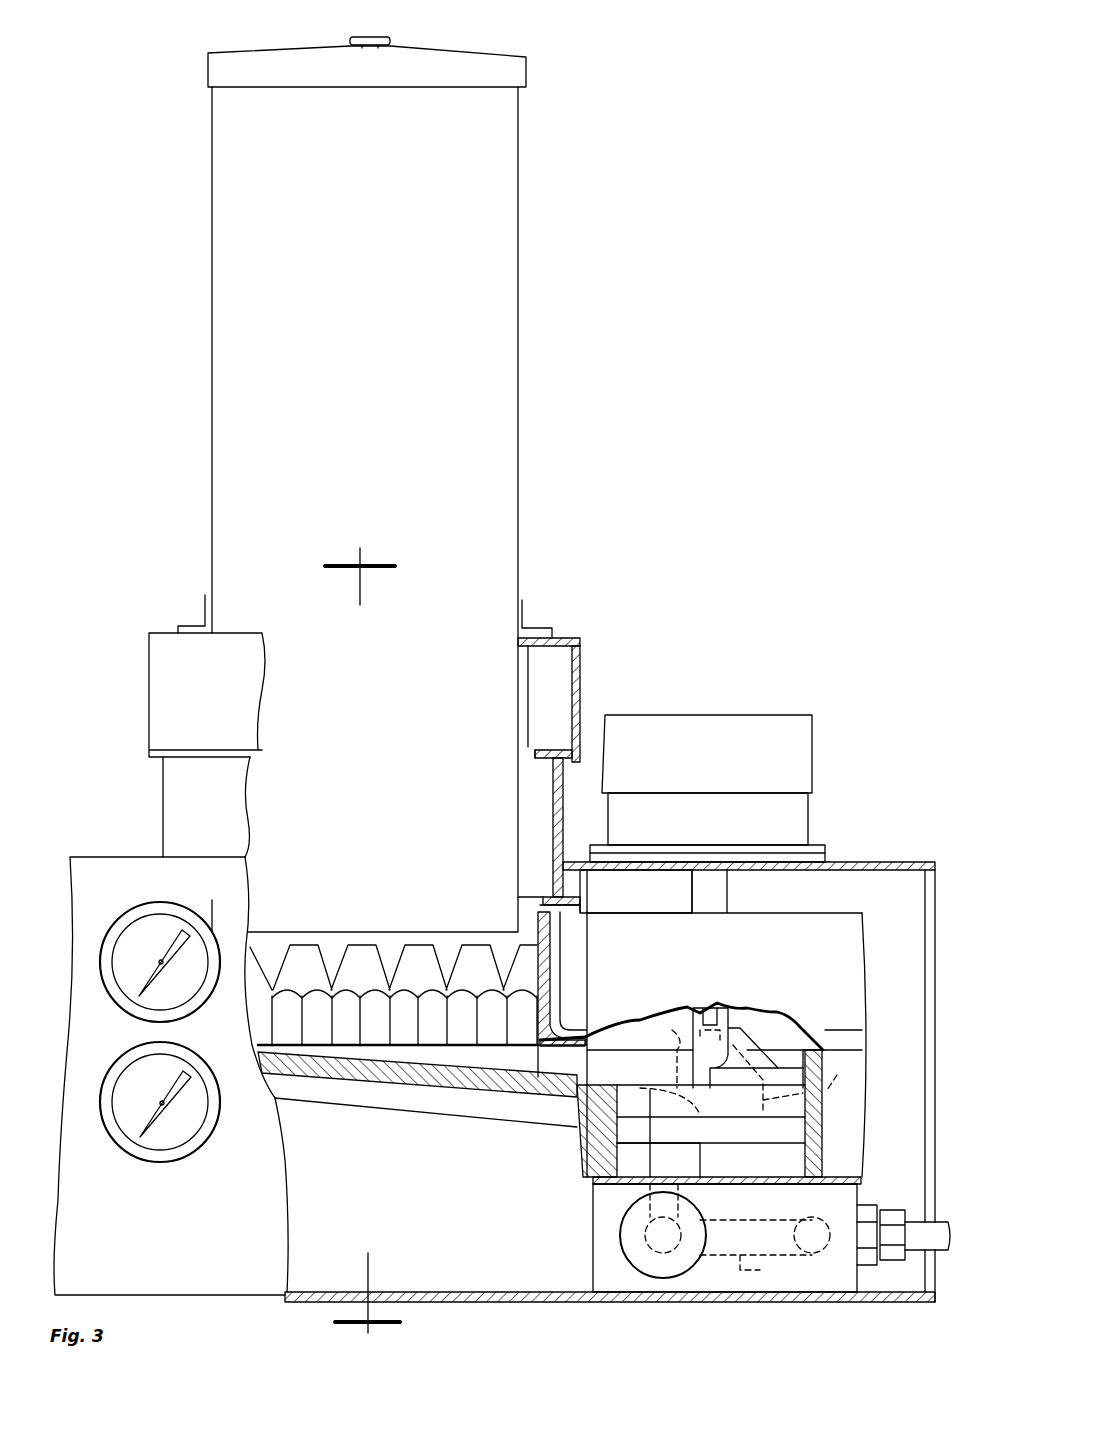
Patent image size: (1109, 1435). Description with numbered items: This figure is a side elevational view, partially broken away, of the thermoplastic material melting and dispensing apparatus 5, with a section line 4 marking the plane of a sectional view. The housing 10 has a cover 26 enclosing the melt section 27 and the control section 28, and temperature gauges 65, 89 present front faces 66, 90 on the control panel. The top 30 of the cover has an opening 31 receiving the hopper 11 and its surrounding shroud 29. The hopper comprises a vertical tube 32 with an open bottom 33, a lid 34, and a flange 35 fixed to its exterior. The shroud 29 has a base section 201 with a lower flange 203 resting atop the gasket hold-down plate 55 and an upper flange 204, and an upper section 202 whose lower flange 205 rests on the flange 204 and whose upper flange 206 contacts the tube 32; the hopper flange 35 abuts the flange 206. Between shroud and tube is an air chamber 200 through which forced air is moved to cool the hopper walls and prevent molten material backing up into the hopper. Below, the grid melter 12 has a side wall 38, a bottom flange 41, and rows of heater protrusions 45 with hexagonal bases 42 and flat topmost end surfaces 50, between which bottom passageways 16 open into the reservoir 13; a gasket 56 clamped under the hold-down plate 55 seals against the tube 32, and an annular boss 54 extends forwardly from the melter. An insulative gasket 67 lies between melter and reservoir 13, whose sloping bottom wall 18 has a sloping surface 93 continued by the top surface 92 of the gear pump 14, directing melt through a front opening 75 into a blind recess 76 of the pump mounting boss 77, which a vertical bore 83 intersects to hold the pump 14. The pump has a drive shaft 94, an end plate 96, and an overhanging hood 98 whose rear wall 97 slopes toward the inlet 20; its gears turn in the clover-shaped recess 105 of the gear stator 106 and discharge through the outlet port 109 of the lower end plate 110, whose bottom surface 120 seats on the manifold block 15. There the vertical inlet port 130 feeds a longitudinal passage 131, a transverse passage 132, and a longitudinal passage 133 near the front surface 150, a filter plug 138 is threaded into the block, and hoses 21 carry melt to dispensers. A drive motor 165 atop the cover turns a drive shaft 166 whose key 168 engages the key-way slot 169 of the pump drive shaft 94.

The section line 4 is at (362, 946).
The thermoplastic material melting and dispensing apparatus 5 is at (776, 362).
The housing 10 is at (945, 834).
The hopper 11 is at (540, 297).
The grid melter 12 is at (565, 971).
The reservoir 13 is at (288, 1092).
The gear pump 14 is at (815, 1112).
The manifold block 15 is at (590, 1262).
The bottom passageways 16 is at (378, 1032).
The sloping bottom wall 18 is at (446, 1058).
The pump inlet 20 is at (844, 1067).
The hoses or conduits 21 is at (940, 1236).
The cover 26 is at (935, 922).
The melt section 27 is at (710, 1335).
The control section 28 is at (92, 850).
The shroud 29 is at (165, 707).
The top of the cover 30 is at (682, 860).
The opening 31 is at (565, 860).
The vertical tube 32 is at (307, 877).
The bottom of the hopper tube 33 is at (334, 928).
The lid 34 is at (367, 62).
The flange 35 is at (528, 604).
The side wall 38 is at (560, 952).
The bottom flange 41 is at (577, 1026).
The base 42 is at (470, 1047).
The protrusions 45 is at (332, 988).
The topmost end surfaces 50 is at (360, 945).
The annular boss 54 is at (726, 1048).
The gasket hold-down plate 55 is at (600, 902).
The gasket 56 is at (543, 900).
The temperature measuring gauge 65 is at (165, 903).
The front face of gauge 66 is at (151, 963).
The insulative gasket 67 is at (585, 1047).
The front opening 75 is at (566, 1065).
The blind recess 76 is at (813, 1052).
The pump mounting boss 77 is at (822, 1107).
The vertical bore 83 is at (800, 1172).
The temperature measuring gauge 89 is at (150, 1160).
The front face of gauge 90 is at (150, 1104).
The top surface of the pump 92 is at (721, 1067).
The sloping surface 93 is at (525, 1064).
The drive shaft 94 is at (757, 1030).
The end plate 96 is at (822, 1050).
The overhanging rear wall 97 is at (753, 1043).
The overhanging hood 98 is at (805, 1003).
The clover-shaped recess 105 is at (607, 1120).
The gear stator 106 is at (790, 1131).
The outlet port 109 is at (600, 1197).
The lower end plate 110 is at (728, 1160).
The bottom surface of the end plate 120 is at (768, 1176).
The vertical inlet port 130 is at (630, 1185).
The longitudinal passage 131 is at (655, 1258).
The transverse passage 132 is at (740, 1270).
The longitudinal passage 133 is at (813, 1260).
The plug 138 is at (683, 1282).
The front surface 150 is at (857, 1192).
The drive motor 165 is at (770, 713).
The drive shaft 166 is at (730, 902).
The key 168 is at (708, 1008).
The key-way slot 169 is at (683, 1010).
The air chamber 200 is at (582, 661).
The base section 201 is at (206, 807).
The upper section 202 is at (207, 695).
The lower flange 203 is at (598, 888).
The upper flange 204 is at (575, 775).
The lower flange 205 is at (535, 754).
The upper flange 206 is at (530, 662).